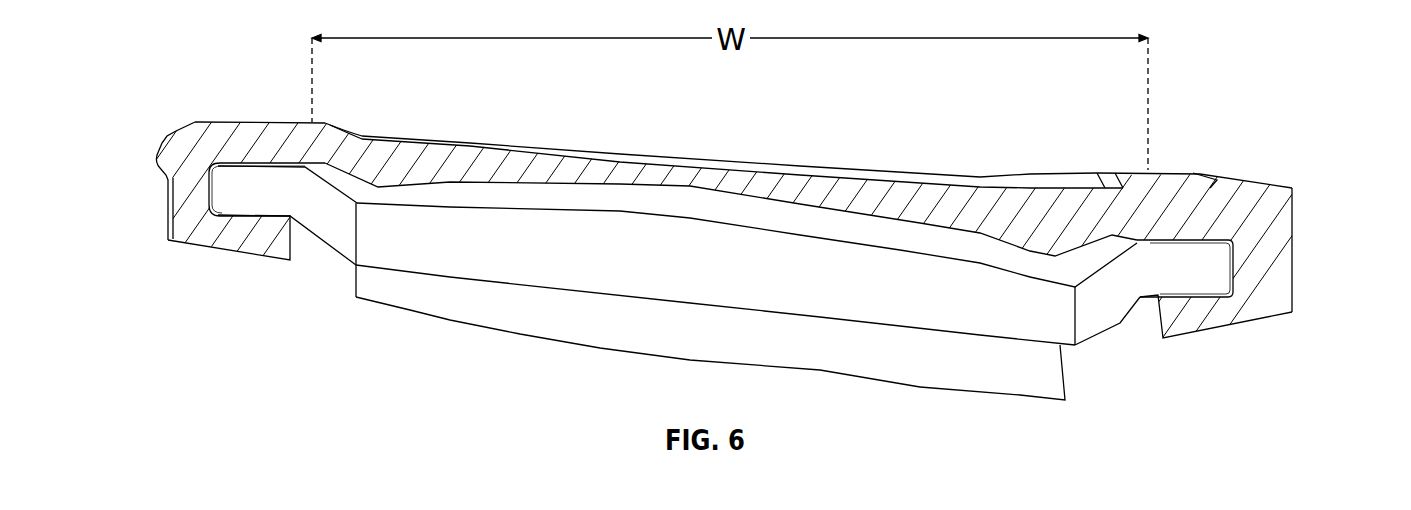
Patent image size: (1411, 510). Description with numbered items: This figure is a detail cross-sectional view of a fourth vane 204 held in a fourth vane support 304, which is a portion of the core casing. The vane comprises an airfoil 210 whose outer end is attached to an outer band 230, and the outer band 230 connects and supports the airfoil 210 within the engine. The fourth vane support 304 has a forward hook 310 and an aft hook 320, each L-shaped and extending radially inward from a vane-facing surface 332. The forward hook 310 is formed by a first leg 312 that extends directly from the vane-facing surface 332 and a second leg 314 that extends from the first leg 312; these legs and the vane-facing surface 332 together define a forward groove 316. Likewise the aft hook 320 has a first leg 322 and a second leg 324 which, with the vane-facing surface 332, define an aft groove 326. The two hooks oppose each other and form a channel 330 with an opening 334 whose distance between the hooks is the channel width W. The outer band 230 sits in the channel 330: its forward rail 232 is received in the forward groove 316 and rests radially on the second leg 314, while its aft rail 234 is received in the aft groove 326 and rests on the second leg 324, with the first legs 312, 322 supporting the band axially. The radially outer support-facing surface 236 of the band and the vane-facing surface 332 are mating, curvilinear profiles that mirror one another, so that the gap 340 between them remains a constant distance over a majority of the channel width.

The fourth vane 204 is at (1027, 375).
The airfoil 210 is at (710, 372).
The outer band 230 is at (711, 235).
The forward rail 232 is at (257, 200).
The aft rail 234 is at (1180, 270).
The support-facing surface 236 is at (951, 248).
The fourth vane support 304 is at (731, 215).
The forward hook 310 is at (186, 189).
The first leg 312 is at (188, 193).
The second leg 314 is at (273, 240).
The forward groove 316 is at (238, 178).
The aft hook 320 is at (1245, 249).
The first leg 322 is at (1280, 240).
The second leg 324 is at (1167, 320).
The aft groove 326 is at (1205, 270).
The channel 330 is at (512, 198).
The vane-facing surface 332 is at (914, 233).
The opening 334 is at (795, 294).
The gap 340 is at (695, 205).